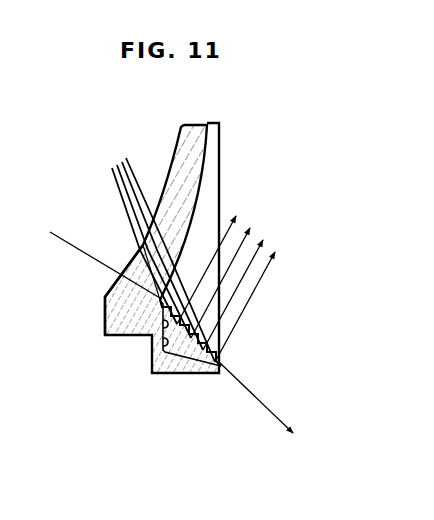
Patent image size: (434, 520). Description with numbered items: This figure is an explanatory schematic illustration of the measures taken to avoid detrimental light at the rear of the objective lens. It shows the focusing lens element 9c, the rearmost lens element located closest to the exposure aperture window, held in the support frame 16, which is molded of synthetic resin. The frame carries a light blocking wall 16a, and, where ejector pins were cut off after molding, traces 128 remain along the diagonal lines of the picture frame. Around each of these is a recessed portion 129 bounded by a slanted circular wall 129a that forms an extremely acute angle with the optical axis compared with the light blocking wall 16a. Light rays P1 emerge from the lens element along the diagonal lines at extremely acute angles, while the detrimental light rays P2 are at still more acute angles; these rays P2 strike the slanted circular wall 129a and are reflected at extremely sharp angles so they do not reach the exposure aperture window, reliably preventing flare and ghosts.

The focusing lens element 9c is at (181, 152).
The support frame 16 is at (192, 373).
The light blocking wall 16a is at (160, 313).
The traces 128 is at (162, 328).
The recessed portion 129 is at (164, 341).
The slanted circular wall 129a is at (160, 352).
The light rays P1 is at (267, 405).
The detrimental light rays P2 is at (177, 260).